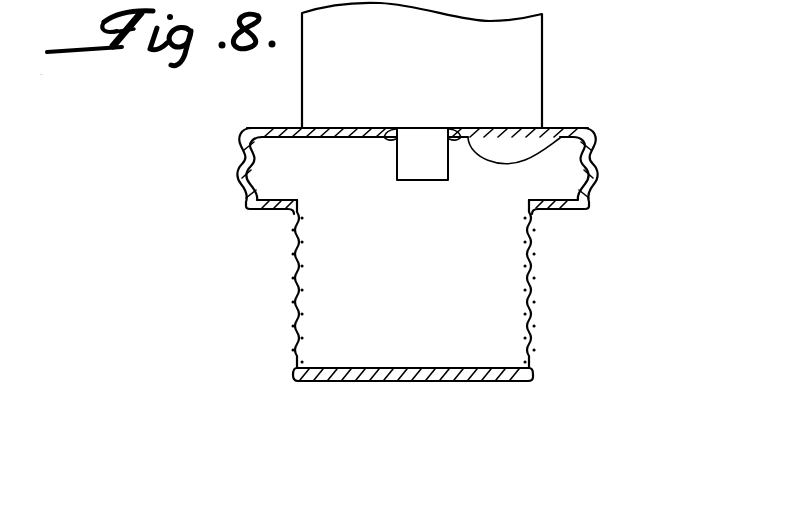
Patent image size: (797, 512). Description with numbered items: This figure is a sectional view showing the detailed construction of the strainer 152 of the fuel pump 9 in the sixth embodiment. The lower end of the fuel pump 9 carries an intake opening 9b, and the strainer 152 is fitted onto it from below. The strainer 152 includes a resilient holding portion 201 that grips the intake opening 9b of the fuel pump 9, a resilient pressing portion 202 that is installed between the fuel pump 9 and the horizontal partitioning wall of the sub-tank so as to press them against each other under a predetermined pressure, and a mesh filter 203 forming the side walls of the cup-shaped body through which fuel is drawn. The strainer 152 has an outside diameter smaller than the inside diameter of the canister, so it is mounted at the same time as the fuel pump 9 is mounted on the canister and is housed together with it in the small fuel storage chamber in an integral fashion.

The fuel pump 9 is at (535, 53).
The intake opening 9b is at (415, 180).
The resilient holding portion 201 is at (587, 127).
The resilient pressing portion 202 is at (598, 190).
The mesh filter 203 is at (530, 308).
The strainer 152 is at (442, 385).